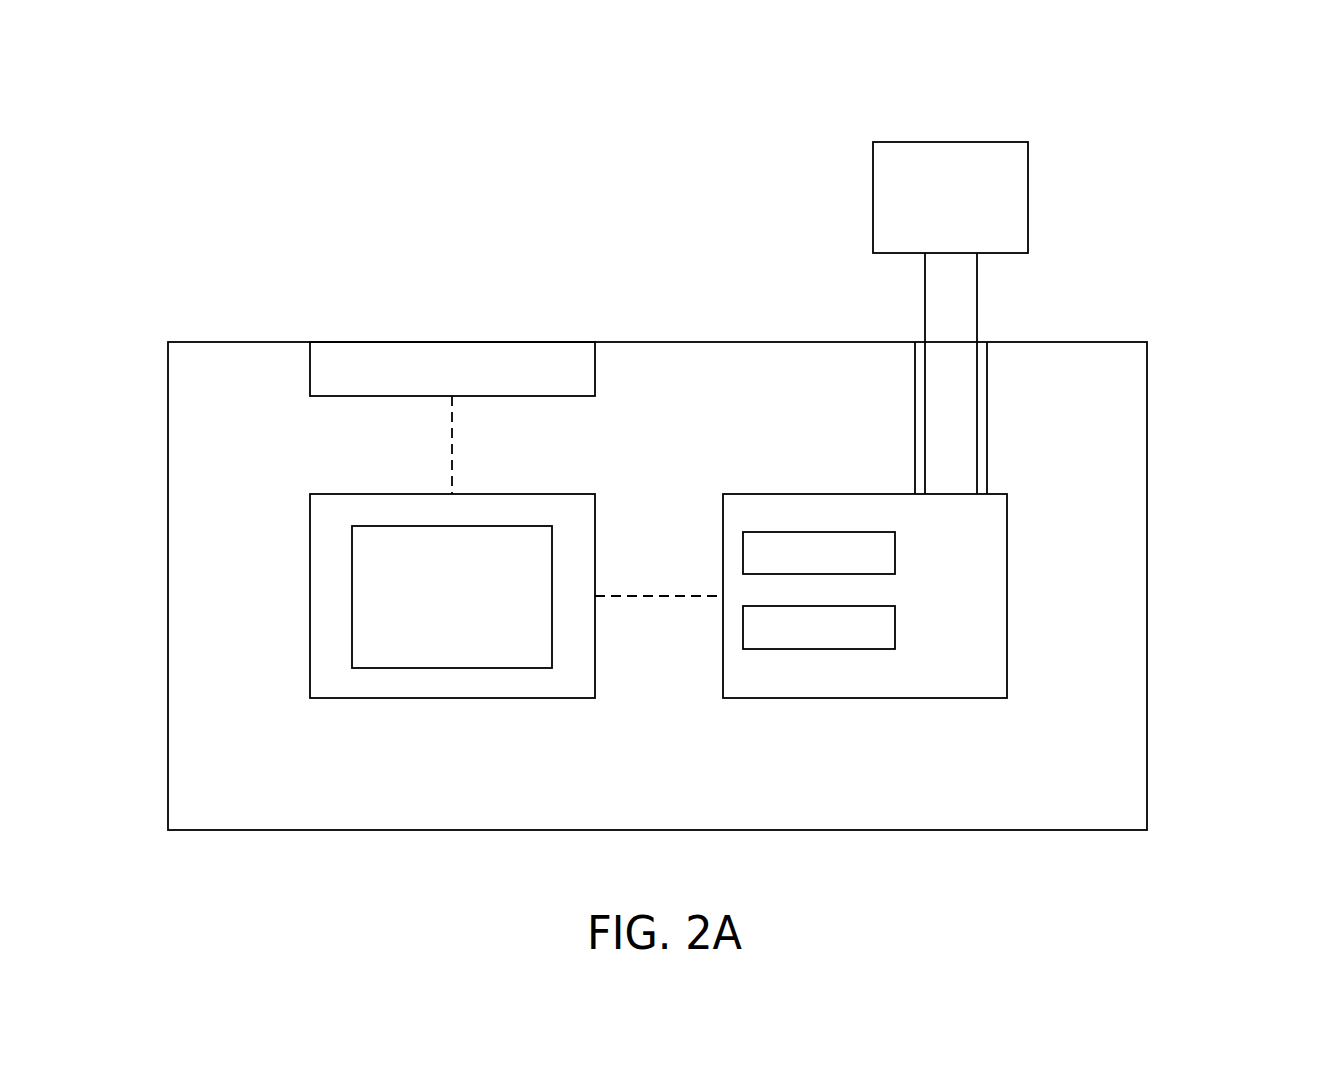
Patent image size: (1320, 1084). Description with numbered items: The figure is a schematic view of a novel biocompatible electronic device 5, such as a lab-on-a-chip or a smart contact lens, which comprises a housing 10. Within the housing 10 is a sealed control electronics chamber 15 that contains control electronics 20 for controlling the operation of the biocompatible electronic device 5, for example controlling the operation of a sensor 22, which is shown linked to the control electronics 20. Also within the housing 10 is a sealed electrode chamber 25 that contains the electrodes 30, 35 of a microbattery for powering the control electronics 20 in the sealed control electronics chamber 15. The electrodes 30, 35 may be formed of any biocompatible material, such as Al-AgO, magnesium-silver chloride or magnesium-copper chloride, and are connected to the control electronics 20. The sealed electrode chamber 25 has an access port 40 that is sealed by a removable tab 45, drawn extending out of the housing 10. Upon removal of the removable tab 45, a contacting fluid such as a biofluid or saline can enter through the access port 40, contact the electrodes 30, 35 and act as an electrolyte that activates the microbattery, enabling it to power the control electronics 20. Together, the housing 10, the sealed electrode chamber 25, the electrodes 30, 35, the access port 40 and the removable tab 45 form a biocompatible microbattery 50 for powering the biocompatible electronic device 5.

The biocompatible electronic device 5 is at (1134, 115).
The housing 10 is at (1122, 323).
The sealed control electronics chamber 15 is at (538, 721).
The control electronics 20 is at (395, 691).
The sensor 22 is at (484, 320).
The sealed electrode chamber 25 is at (955, 721).
The electrode 30 is at (797, 597).
The electrode 35 is at (811, 672).
The access port 40 is at (992, 406).
The removable tab 45 is at (1001, 297).
The biocompatible microbattery 50 is at (1091, 594).